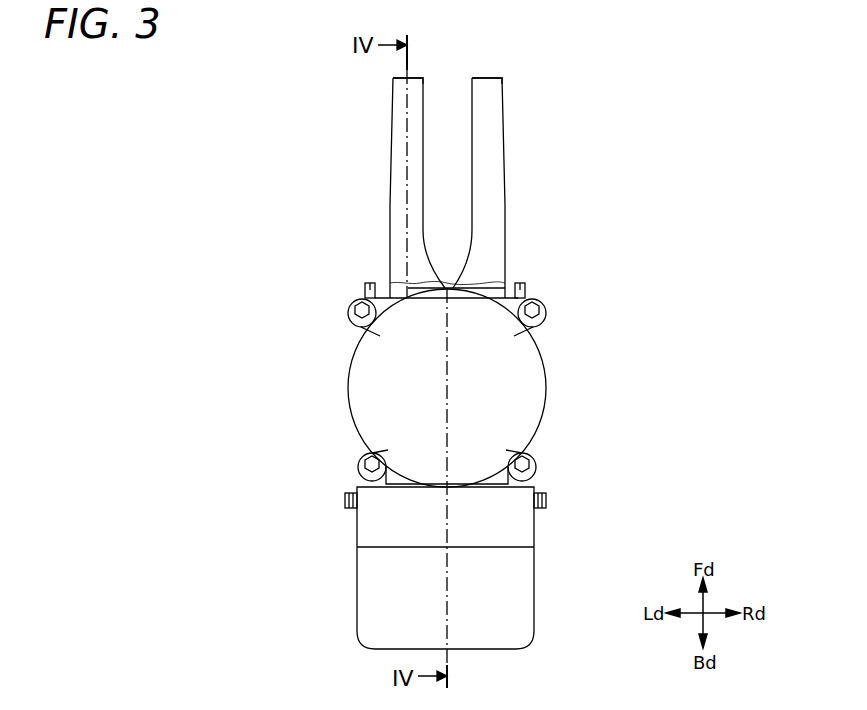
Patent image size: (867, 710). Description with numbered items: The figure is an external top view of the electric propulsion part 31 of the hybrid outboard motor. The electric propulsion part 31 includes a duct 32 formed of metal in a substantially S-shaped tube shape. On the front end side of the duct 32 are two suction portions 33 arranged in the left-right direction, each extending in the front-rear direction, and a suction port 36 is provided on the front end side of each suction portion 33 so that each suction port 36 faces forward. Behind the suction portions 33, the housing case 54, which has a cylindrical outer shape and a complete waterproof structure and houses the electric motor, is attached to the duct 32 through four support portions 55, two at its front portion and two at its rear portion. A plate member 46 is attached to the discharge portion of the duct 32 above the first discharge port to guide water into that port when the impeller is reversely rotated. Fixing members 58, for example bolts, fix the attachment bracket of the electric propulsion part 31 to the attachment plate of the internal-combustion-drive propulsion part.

The electric propulsion part 31 is at (250, 381).
The duct 32 is at (538, 211).
The suction portion 33 is at (390, 192).
The suction port 36 is at (398, 76).
The plate member 46 is at (376, 580).
The housing case 54 is at (528, 382).
The support portion 55 is at (348, 305).
The fixing member 58 is at (368, 283).